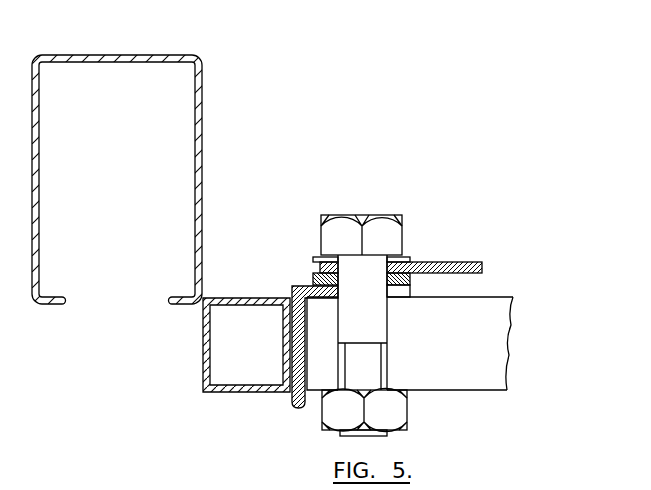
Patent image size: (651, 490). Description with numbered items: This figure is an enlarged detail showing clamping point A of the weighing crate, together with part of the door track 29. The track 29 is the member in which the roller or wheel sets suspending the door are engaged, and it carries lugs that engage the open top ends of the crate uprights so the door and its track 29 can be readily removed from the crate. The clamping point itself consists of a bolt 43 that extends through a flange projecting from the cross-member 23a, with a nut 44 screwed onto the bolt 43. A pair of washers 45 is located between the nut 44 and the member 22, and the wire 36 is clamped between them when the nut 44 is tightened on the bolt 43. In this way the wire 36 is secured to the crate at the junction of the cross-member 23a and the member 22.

The track 29 is at (120, 56).
The cross-member 23a is at (244, 313).
The member 22 is at (488, 326).
The bolt 43 is at (385, 228).
The washers 45 is at (411, 280).
The wire 36 is at (482, 263).
The nut 44 is at (403, 414).